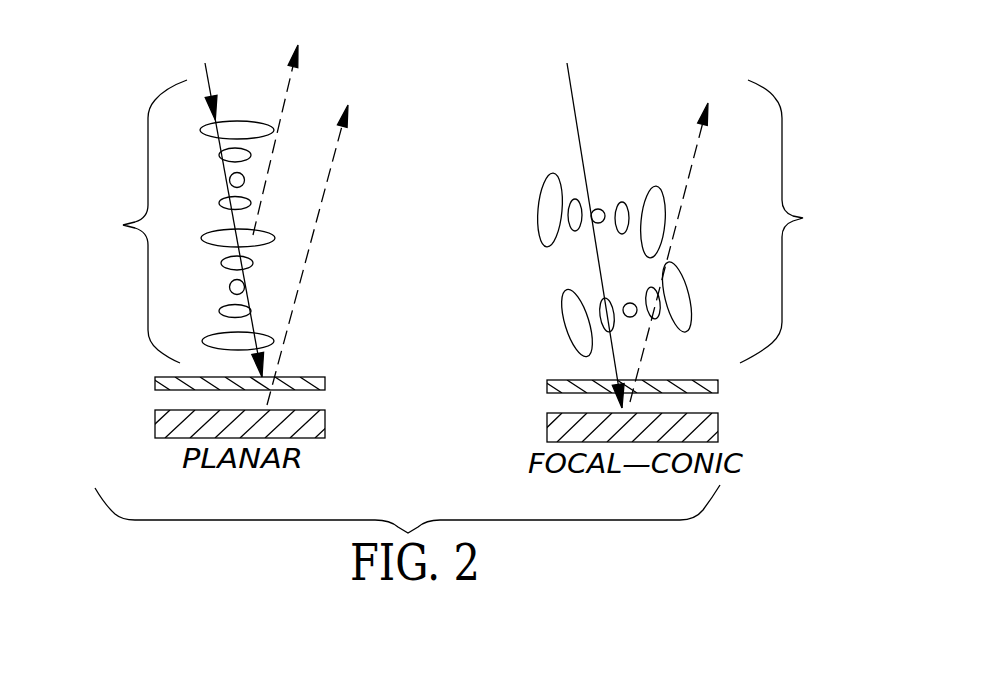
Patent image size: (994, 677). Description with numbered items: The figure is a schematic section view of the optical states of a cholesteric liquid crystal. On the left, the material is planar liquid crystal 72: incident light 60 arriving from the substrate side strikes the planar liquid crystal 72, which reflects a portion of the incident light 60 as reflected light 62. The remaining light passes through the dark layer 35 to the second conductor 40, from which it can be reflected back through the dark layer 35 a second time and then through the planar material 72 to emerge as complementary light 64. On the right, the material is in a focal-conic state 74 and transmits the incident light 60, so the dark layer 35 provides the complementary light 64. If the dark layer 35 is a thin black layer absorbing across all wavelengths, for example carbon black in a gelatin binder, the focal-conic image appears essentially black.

The dark layer 35 is at (155, 379).
The second conductor 40 is at (155, 424).
The incident light 60 is at (205, 70).
The reflected light 62 is at (287, 92).
The complementary light 64 is at (333, 162).
The planar liquid crystal 72 is at (181, 221).
The focal-conic state 74 is at (691, 221).